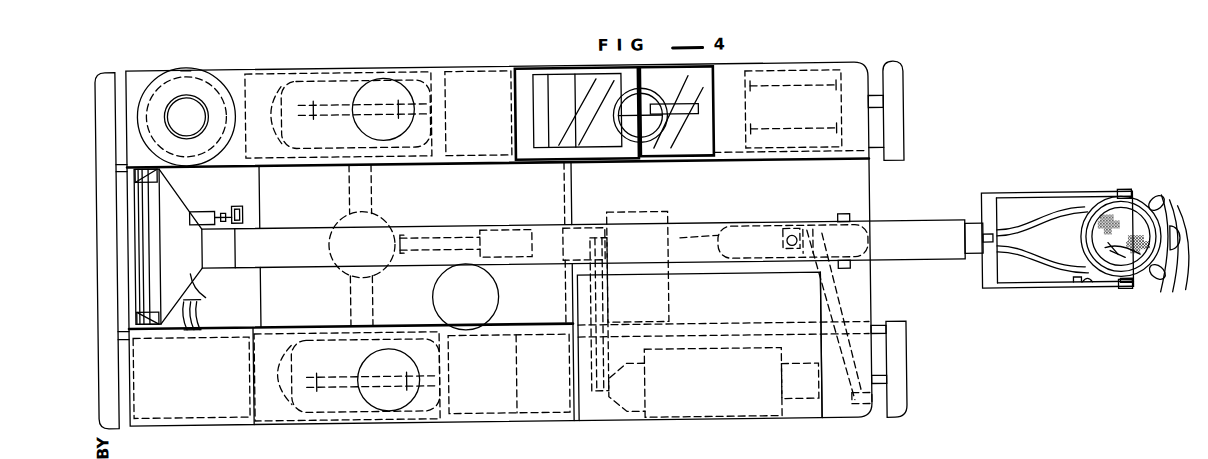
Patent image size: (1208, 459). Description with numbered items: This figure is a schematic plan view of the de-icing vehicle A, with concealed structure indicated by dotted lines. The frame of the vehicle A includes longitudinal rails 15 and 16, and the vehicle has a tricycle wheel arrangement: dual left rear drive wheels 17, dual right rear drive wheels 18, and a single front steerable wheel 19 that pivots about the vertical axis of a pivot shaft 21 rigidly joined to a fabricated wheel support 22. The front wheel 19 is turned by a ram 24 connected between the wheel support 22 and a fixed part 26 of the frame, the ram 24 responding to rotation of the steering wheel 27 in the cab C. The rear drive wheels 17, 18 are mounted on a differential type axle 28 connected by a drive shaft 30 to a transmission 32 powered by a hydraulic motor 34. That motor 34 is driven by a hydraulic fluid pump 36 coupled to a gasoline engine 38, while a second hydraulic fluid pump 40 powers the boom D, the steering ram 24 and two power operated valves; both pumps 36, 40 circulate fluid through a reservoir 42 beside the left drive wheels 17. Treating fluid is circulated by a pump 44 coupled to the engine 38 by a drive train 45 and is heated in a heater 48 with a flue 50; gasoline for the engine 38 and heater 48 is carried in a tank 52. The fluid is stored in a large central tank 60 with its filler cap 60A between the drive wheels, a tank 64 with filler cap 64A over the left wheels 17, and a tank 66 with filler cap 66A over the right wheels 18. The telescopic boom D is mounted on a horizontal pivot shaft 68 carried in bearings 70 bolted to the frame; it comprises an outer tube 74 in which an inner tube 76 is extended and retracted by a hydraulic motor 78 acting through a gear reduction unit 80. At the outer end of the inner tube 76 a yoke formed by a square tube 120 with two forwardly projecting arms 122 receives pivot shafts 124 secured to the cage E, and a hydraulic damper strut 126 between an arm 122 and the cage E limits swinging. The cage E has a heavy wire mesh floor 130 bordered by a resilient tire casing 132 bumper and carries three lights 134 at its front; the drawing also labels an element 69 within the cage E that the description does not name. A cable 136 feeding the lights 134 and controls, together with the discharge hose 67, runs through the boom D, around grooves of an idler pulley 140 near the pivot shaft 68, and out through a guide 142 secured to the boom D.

The longitudinal rail 15 is at (800, 164).
The longitudinal rail 16 is at (700, 326).
The dual left rear drive wheels 17 is at (338, 114).
The dual right rear drive wheels 18 is at (347, 376).
The front steerable wheel 19 is at (695, 246).
The pivot shaft 21 is at (790, 231).
The wheel support 22 is at (790, 224).
The ram 24 is at (842, 324).
The fixed part of the frame 26 is at (858, 419).
The steering wheel 27 is at (622, 136).
The differential type axle 28 is at (373, 178).
The drive shaft 30 is at (418, 226).
The transmission 32 is at (482, 206).
The hydraulic motor 34 is at (590, 229).
The hydraulic fluid pump 36 is at (792, 409).
The gasoline engine 38 is at (635, 407).
The hydraulic fluid pump 40 is at (835, 409).
The reservoir 42 is at (446, 94).
The pump 44 is at (628, 214).
The drive train 45 is at (607, 311).
The heater 48 is at (189, 66).
The flue 50 is at (172, 92).
The tank 52 is at (540, 420).
The central tank 60 is at (282, 200).
The filler cap 60A is at (448, 305).
The tank 64 is at (246, 88).
The filler cap 64A is at (379, 90).
The tank 66 is at (245, 387).
The filler cap 66A is at (375, 393).
The discharge hose 67 is at (200, 311).
The horizontal pivot shaft 68 is at (140, 186).
The cutter 69 is at (1120, 258).
The bearings 70 is at (138, 166).
The outer tube 74 is at (279, 254).
The inner tube 76 is at (975, 246).
The hydraulic motor 78 is at (237, 203).
The gear reduction unit 80 is at (200, 207).
The square tube 120 is at (985, 281).
The arms 122 is at (1018, 199).
The pivot shaft 124 is at (1123, 203).
The hydraulic damper strut 126 is at (1093, 292).
The wire mesh floor 130 is at (1100, 232).
The tire casing 132 is at (1145, 208).
The lights 134 is at (1182, 293).
The cable 136 is at (195, 327).
The idler pulley 140 is at (207, 272).
The guide 142 is at (200, 295).
The vehicle A is at (818, 57).
The cab C is at (548, 70).
The boom D is at (915, 230).
The cage E is at (1108, 205).